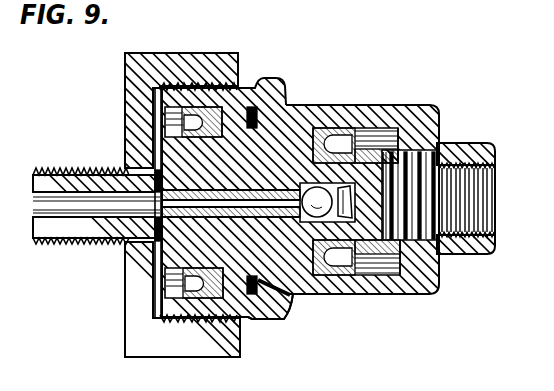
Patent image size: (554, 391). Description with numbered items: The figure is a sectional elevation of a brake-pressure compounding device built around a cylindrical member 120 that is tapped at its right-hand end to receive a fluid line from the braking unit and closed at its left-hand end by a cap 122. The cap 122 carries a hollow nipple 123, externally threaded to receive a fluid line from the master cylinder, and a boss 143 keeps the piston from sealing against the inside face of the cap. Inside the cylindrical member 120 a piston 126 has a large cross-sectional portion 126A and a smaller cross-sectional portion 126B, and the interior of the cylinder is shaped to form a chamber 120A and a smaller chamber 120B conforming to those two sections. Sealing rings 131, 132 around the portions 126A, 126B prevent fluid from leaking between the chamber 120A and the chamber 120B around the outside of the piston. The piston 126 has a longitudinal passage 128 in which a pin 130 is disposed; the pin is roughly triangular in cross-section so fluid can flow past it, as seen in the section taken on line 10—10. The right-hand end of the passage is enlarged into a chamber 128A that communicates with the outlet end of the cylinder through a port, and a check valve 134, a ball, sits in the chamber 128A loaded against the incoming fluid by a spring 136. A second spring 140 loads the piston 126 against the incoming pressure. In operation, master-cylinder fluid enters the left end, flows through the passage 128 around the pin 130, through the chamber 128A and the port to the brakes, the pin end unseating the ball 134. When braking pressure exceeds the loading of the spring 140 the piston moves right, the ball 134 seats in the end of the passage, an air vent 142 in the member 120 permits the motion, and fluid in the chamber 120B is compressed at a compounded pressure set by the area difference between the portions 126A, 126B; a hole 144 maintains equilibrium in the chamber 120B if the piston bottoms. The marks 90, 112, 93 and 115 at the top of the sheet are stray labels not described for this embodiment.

The section line 10— 10 is at (240, 190).
The cylindrical member 120 is at (383, 106).
The chamber 120A is at (175, 118).
The chamber 120B is at (405, 140).
The cap 122 is at (181, 53).
The hollow nipple 123 is at (75, 168).
The piston 126 is at (289, 140).
The large cross-sectional portion 126A is at (247, 107).
The smaller cross-sectional portion 126B is at (292, 275).
The longitudinal passage 128 is at (200, 218).
The chamber 128A is at (320, 140).
The pin 130 is at (160, 232).
The sealing ring 131 is at (210, 107).
The sealing ring 132 is at (342, 246).
The check valve 134 is at (345, 272).
The spring 136 is at (395, 143).
The spring 140 is at (445, 143).
The air vent 142 is at (290, 300).
The boss 143 is at (153, 168).
The hole 144 is at (412, 240).
The element 90' 90 is at (325, 8).
The element 112' 112 is at (370, 8).
The element 93 is at (393, 6).
The element 115 is at (433, 0).